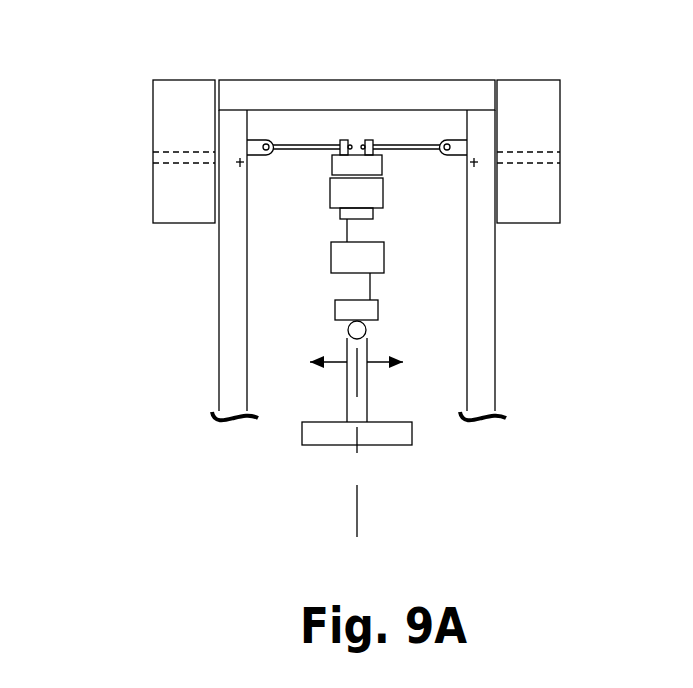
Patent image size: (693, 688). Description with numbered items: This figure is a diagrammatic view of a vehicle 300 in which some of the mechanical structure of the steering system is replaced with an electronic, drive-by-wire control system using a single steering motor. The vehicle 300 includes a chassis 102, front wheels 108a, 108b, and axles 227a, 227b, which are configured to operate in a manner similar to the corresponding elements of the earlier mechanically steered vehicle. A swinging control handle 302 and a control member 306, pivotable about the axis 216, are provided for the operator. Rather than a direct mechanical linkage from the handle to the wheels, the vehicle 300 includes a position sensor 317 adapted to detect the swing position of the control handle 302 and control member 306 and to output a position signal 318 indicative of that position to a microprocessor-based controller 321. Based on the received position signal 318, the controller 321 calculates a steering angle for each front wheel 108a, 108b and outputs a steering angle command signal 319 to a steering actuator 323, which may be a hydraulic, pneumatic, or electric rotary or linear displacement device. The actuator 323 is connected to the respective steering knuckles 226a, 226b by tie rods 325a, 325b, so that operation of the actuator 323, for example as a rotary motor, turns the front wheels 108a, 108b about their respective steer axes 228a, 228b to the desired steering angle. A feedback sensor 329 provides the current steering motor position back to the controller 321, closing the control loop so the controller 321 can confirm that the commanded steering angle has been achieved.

The chassis 102 is at (218, 298).
The front wheel 108a is at (153, 108).
The front wheel 108b is at (562, 105).
The axis 216 is at (358, 498).
The steering knuckle 226a is at (257, 128).
The steering knuckle 226b is at (459, 128).
The axle 227a is at (175, 163).
The axle 227b is at (533, 165).
The steer axis 228a is at (240, 163).
The steer axis 228b is at (475, 163).
The vehicle 300 is at (514, 323).
The swinging control handle 302 is at (302, 445).
The control member 306 is at (368, 373).
The position sensor 317 is at (378, 310).
The position signal 318 is at (368, 288).
The steering angle command signal 319 is at (347, 231).
The microprocessor-based controller 321 is at (331, 253).
The steering actuator 323 is at (385, 186).
The tie rod 325a is at (305, 146).
The tie rod 325b is at (423, 146).
The feedback sensor 329 is at (375, 213).